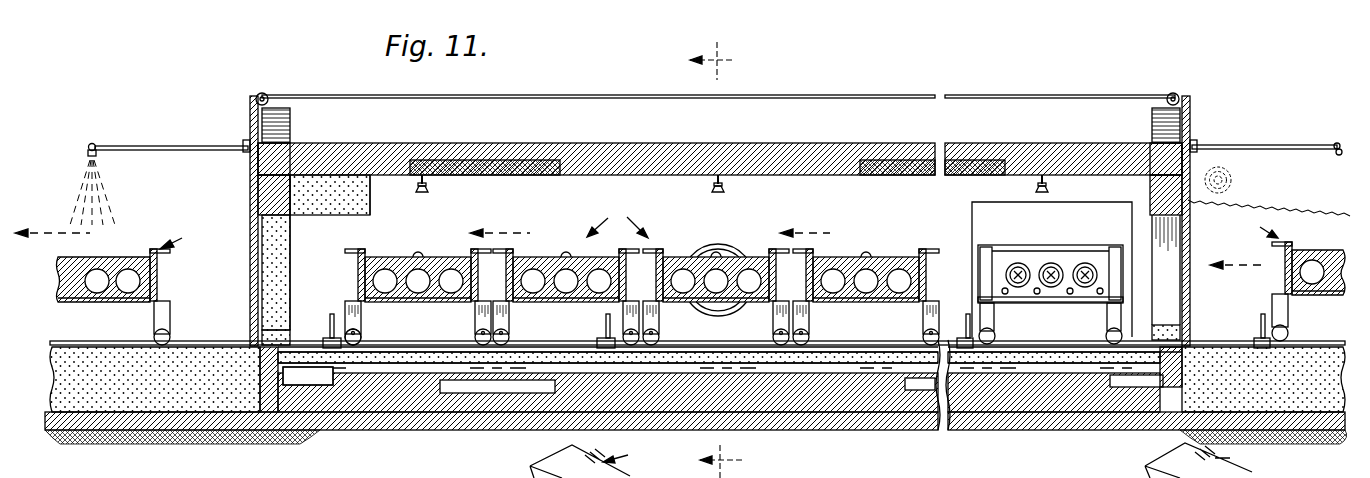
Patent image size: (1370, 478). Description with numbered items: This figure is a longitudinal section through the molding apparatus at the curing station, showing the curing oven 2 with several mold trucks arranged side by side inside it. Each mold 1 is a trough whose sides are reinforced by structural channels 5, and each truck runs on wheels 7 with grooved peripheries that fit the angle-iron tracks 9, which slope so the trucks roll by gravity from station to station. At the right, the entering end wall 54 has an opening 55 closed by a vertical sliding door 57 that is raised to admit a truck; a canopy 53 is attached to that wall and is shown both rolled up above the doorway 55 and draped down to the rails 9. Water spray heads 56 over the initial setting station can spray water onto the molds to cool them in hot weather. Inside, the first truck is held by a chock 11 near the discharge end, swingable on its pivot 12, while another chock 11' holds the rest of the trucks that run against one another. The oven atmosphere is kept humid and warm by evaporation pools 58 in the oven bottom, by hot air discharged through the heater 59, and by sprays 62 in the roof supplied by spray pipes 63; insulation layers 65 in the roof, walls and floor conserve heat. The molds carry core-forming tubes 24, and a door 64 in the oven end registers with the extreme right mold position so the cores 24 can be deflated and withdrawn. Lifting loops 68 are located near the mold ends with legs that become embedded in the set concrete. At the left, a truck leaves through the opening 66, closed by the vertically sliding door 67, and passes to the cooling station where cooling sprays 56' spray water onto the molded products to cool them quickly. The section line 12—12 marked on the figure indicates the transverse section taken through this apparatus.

The mold 1 is at (646, 340).
The curing oven 2 is at (768, 143).
The structural channel 5 is at (1248, 470).
The wheel 7 is at (363, 335).
The track 9 is at (216, 340).
The chock 11 is at (785, 323).
The chock 11' is at (594, 329).
The pivot 12 is at (721, 258).
The core-forming tube 24 is at (1051, 262).
The canopy 53 is at (1232, 178).
The entering end wall 54 is at (1192, 103).
The opening 55 is at (1184, 216).
The water spray head 56 is at (1267, 136).
The cooling spray 56' is at (147, 175).
The vertical sliding door 57 is at (1192, 298).
The evaporation pool 58 is at (343, 370).
The heater 59 is at (730, 247).
The spray 62 is at (425, 188).
The spray pipe 63 is at (418, 190).
The door 64 is at (974, 216).
The insulation layer 65 is at (292, 190).
The opening 66 is at (283, 213).
The vertically sliding door 67 is at (250, 272).
The lifting loop 68 is at (421, 255).